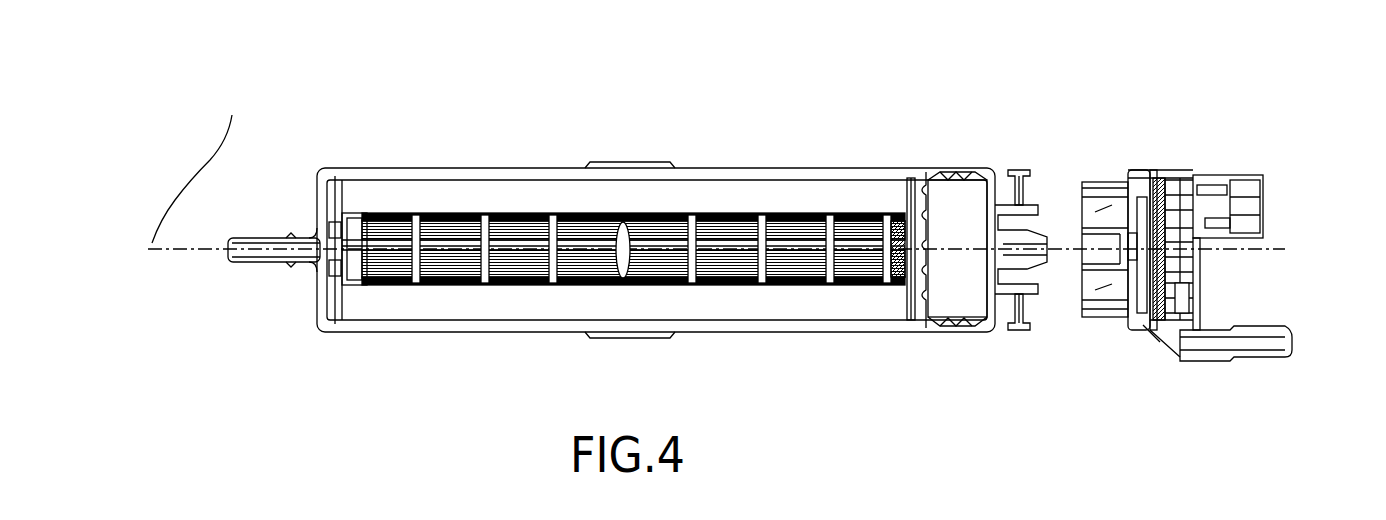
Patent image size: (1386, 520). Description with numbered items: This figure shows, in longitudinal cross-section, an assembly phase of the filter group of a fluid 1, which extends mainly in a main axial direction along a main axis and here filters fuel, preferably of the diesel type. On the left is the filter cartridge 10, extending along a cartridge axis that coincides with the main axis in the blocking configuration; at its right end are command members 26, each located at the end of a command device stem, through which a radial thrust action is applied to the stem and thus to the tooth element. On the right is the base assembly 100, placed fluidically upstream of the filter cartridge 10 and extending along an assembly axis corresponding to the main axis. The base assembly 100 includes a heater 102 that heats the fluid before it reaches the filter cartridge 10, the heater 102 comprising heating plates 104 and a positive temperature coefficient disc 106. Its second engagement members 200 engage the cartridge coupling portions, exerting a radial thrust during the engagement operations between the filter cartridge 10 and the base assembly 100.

The filter group of a fluid 1 is at (1316, 146).
The filter cartridge 10 is at (808, 146).
The command member 26 is at (1018, 163).
The base assembly 100 is at (1105, 138).
The heater 102 is at (1200, 270).
The heating plates 104 is at (1166, 194).
The positive temperature coefficient (PTC) disc 106 is at (1150, 320).
The second engagement members 200 is at (1149, 508).